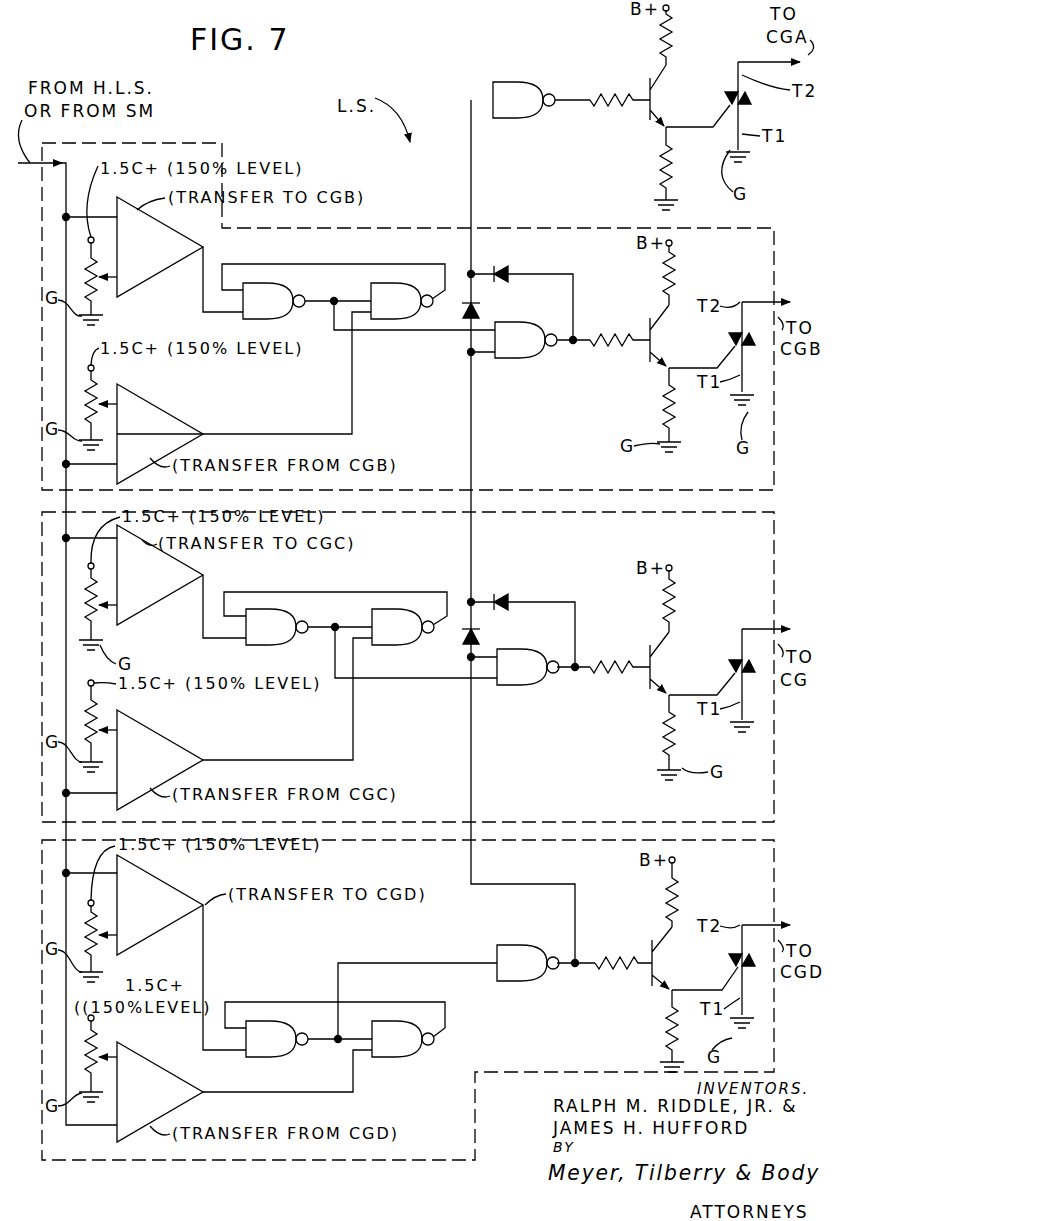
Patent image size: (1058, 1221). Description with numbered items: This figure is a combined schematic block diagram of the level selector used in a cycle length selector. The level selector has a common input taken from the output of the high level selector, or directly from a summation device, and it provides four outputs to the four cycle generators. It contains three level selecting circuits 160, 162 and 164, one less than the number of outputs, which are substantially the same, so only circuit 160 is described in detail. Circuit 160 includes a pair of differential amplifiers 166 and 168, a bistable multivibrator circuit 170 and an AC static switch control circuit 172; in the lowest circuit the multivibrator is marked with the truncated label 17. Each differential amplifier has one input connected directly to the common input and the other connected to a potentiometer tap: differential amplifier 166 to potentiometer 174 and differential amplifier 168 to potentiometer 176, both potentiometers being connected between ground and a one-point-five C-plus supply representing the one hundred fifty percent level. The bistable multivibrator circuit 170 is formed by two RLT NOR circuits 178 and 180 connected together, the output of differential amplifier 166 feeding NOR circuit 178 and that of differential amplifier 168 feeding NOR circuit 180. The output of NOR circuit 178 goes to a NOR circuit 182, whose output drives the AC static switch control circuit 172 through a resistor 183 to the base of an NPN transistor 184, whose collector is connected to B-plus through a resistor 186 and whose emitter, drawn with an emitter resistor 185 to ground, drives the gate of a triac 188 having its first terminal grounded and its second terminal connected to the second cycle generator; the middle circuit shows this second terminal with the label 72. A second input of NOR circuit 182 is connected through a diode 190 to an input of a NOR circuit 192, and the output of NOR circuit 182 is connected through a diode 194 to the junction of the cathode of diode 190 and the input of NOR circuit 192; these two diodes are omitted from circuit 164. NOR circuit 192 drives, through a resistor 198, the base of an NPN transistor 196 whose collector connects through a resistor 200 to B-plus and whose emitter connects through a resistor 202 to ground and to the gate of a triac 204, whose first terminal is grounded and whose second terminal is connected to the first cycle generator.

The level selector circuit 160 is at (777, 412).
The level selector circuit 162 is at (777, 562).
The level selector circuit 164 is at (777, 868).
The differential amplifier 166 is at (140, 280).
The differential amplifier 168 is at (150, 404).
The bistable multivibrator circuit 170 is at (352, 268).
The flip-flop (NOR pair) 17 is at (312, 940).
The AC static switch control circuit 172 is at (683, 286).
The potentiometer 174 is at (108, 308).
The potentiometer 176 is at (91, 384).
The NOR circuit 178 is at (290, 283).
The NOR circuit 180 is at (392, 319).
The NOR circuit 182 is at (525, 358).
The resistor 183 is at (618, 334).
The NPN transistor 184 is at (648, 350).
The emitter resistor 185 is at (662, 402).
The resistor 186 is at (662, 265).
The triac 188 is at (730, 341).
The diode 190 is at (480, 308).
The NOR circuit 192 is at (505, 82).
The diode 194 is at (498, 268).
The NPN transistor 196 is at (646, 85).
The resistor 198 is at (604, 110).
The resistor 200 is at (672, 38).
The resistor 202 is at (660, 160).
The triac 204 is at (750, 102).
The terminal T2 (mislabeled) 72 is at (740, 629).